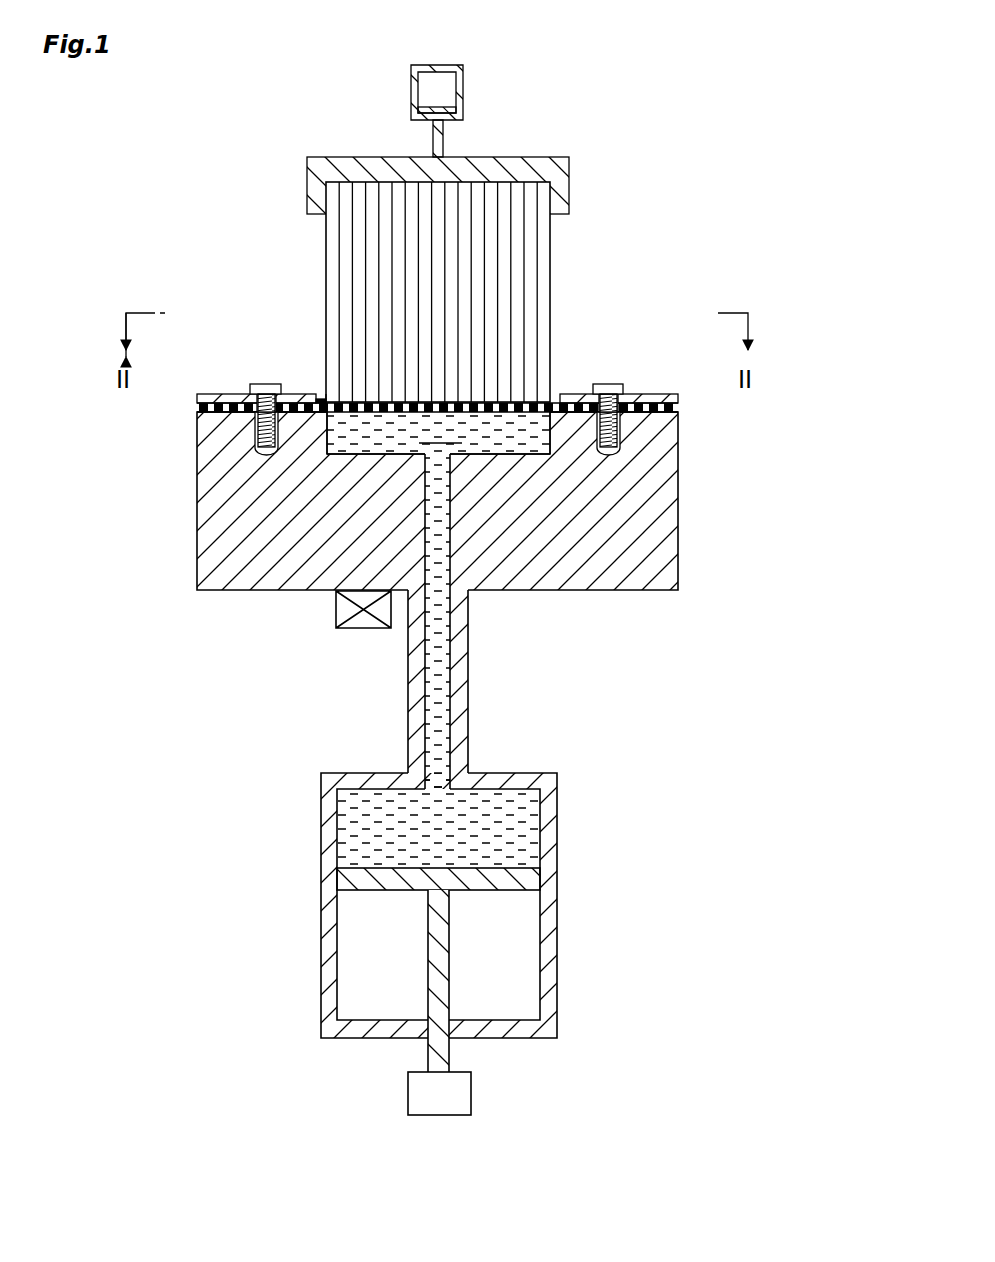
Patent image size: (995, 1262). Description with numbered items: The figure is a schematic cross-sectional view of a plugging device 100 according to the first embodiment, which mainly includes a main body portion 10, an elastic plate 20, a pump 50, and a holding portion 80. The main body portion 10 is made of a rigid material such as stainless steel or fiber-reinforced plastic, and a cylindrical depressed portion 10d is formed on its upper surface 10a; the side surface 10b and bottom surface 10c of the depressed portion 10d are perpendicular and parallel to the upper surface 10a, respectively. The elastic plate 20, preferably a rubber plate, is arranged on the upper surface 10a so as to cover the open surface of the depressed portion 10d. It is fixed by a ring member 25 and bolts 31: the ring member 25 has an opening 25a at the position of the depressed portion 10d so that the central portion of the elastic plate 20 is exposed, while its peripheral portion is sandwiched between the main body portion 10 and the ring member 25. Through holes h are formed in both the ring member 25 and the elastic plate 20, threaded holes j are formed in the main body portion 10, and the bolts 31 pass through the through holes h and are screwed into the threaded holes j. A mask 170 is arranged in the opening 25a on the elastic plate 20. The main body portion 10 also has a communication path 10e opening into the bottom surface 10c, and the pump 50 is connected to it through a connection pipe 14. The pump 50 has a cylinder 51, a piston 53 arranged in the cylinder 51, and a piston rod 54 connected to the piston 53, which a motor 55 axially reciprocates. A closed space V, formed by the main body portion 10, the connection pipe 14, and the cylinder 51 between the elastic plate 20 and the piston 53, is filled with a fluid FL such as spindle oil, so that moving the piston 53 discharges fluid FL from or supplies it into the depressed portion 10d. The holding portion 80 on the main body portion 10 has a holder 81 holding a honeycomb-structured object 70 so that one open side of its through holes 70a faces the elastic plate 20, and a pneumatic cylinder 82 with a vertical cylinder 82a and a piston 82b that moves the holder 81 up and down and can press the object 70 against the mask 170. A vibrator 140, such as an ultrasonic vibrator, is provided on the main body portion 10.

The plugging device 100 is at (772, 398).
The main body portion 10 is at (672, 482).
The upper surface 10a is at (226, 411).
The side surface 10b is at (537, 430).
The bottom surface 10c is at (506, 430).
The depressed portion 10d is at (598, 368).
The communication path 10e is at (433, 547).
The connection pipe 14 is at (468, 690).
The elastic plate 20 is at (665, 409).
The ring member 25 is at (668, 397).
The opening 25a is at (325, 398).
The bolts 31 is at (262, 395).
The through holes h is at (263, 407).
The threaded holes j is at (255, 458).
The honeycomb-structured object 70 is at (552, 291).
The through holes 70a is at (540, 249).
The holding portion 80 is at (646, 86).
The holder 81 is at (556, 186).
The pneumatic cylinder 82 is at (602, 86).
The cylinder 82a is at (463, 90).
The piston 82b is at (456, 110).
The mask 170 is at (319, 399).
The vibrator 140 is at (360, 630).
The fluid FL is at (381, 810).
The closed space V is at (452, 841).
The pump 50 is at (636, 820).
The cylinder 51 is at (548, 838).
The piston 53 is at (507, 880).
The piston rod 54 is at (438, 950).
The motor 55 is at (471, 1092).